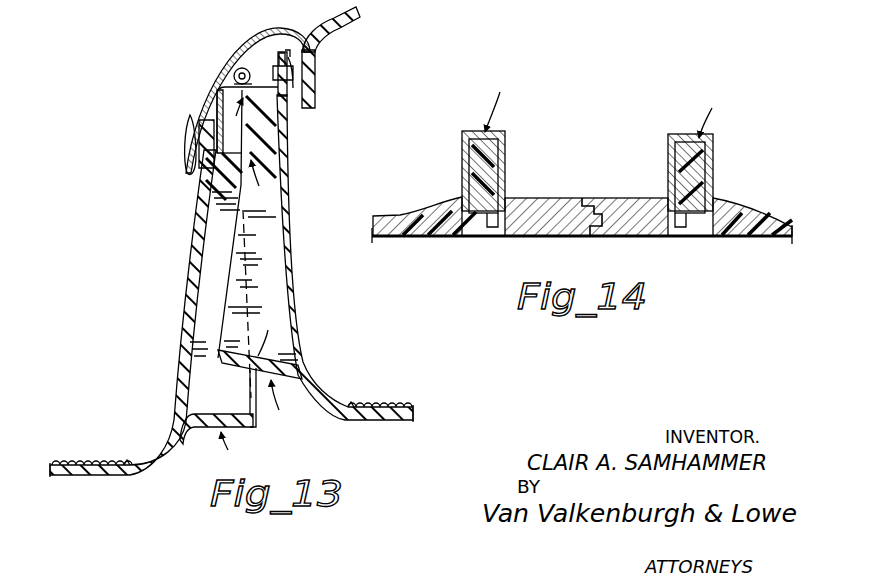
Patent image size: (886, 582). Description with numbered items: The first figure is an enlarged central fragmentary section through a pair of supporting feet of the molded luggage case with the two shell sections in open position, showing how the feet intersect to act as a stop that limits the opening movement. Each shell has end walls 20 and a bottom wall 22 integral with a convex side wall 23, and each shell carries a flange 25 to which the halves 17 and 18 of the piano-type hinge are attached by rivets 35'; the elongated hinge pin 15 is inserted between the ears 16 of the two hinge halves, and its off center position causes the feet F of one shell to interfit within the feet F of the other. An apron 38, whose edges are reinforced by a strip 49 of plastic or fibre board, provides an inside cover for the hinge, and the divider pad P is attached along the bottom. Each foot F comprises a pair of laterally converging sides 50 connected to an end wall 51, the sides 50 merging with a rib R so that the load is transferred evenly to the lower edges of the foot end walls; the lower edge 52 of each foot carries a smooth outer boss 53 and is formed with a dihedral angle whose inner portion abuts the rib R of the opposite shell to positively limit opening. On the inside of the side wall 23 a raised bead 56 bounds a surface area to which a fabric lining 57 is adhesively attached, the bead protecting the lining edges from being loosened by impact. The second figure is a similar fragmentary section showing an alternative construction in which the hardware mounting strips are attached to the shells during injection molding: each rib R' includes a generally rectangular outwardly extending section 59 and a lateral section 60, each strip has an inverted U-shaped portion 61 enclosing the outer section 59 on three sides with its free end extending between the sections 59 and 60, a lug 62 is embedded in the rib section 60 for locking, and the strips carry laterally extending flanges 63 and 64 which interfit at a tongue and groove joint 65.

In FIG. 13, the hinge pin 15 is at (237, 80).
In FIG. 13, the ears 16 is at (240, 68).
In FIG. 13, the hinge half 17 is at (271, 80).
In FIG. 13, the hinge half 18 is at (214, 102).
In FIG. 14, the end walls 20 is at (378, 215).
In FIG. 13, the bottom wall 22 is at (198, 232).
In FIG. 13, the side wall 23 is at (70, 476).
In FIG. 13, the flange 25 is at (205, 172).
In FIG. 13, the rivets 35' is at (335, 79).
In FIG. 13, the apron 38 is at (266, 32).
In FIG. 13, the reinforcing strip 49 is at (186, 148).
In FIG. 13, the converging sides 50 is at (200, 343).
In FIG. 13, the end wall 51 is at (200, 458).
In FIG. 13, the lower edge 52 is at (230, 278).
In FIG. 13, the outer boss 53 is at (224, 364).
In FIG. 13, the raised bead 56 is at (125, 462).
In FIG. 13, the lining 57 is at (77, 462).
In FIG. 14, the outwardly extending section 59 is at (478, 160).
In FIG. 14, the lateral section 60 is at (458, 200).
In FIG. 14, the inverted U-shaped portion 61 is at (505, 150).
In FIG. 14, the lug 62 is at (500, 228).
In FIG. 14, the laterally extending flange 63 is at (554, 197).
In FIG. 14, the laterally extending flange 64 is at (624, 197).
In FIG. 14, the tongue and groove joint 65 is at (597, 212).
In FIG. 13, the foot F is at (256, 423).
In FIG. 13, the divider pad P is at (334, 42).
In FIG. 13, the rib R is at (246, 152).
In FIG. 14, the rib R' is at (607, 105).